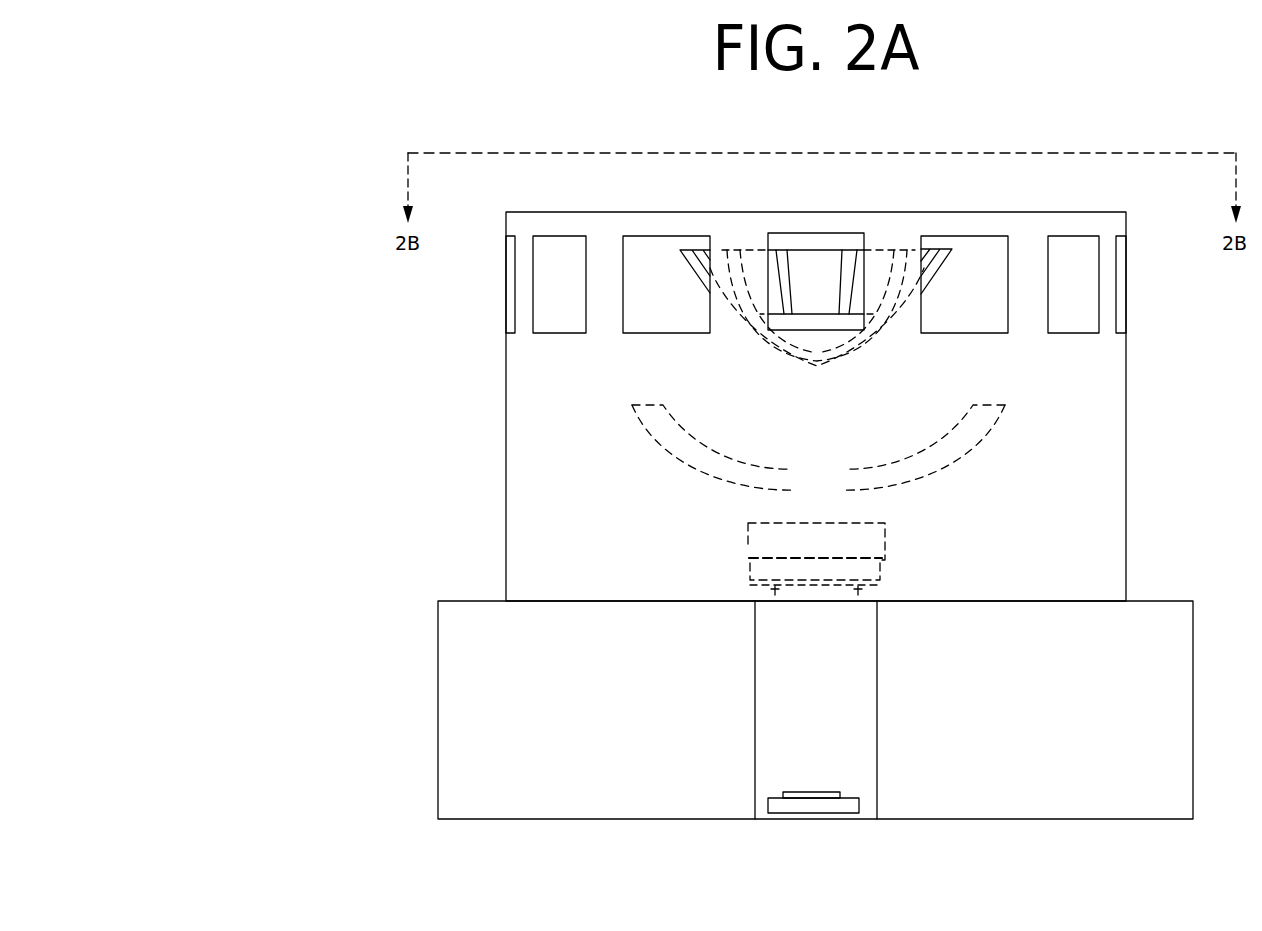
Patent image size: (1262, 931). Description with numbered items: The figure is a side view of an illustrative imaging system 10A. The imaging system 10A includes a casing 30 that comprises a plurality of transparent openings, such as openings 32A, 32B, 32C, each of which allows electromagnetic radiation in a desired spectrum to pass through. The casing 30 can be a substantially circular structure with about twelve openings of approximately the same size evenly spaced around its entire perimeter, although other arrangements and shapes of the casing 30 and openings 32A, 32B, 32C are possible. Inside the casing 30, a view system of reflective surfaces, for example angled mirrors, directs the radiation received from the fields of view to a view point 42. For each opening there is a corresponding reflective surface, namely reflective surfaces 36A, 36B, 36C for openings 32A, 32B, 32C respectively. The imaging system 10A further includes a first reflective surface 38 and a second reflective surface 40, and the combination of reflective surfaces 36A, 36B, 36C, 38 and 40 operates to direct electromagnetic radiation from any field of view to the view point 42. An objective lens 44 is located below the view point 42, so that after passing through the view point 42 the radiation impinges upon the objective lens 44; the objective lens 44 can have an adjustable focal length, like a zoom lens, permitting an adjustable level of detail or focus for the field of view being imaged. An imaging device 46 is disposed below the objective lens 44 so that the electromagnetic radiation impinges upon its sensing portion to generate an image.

The imaging system 10A is at (358, 331).
The casing 30 is at (682, 211).
The opening 32A is at (660, 333).
The opening 32B is at (817, 233).
The opening 32C is at (957, 333).
The reflective surface 36A is at (758, 248).
The reflective surface 36B is at (832, 294).
The reflective surface 36C is at (887, 240).
The first reflective surface 38 is at (810, 362).
The second reflective surface 40 is at (719, 444).
The view point 42 is at (827, 490).
The objective lens 44 is at (747, 537).
The imaging device 46 is at (822, 790).